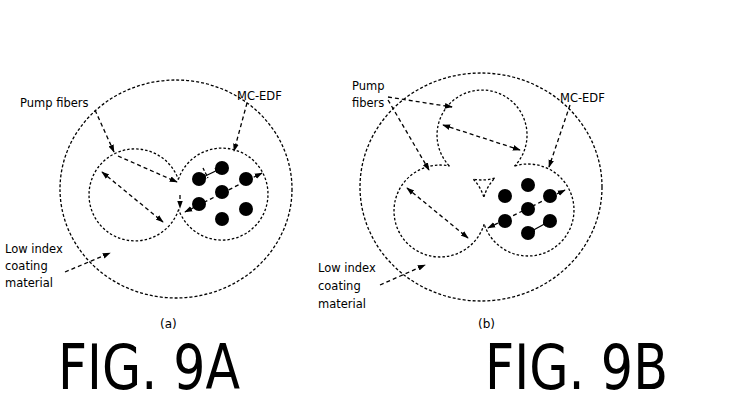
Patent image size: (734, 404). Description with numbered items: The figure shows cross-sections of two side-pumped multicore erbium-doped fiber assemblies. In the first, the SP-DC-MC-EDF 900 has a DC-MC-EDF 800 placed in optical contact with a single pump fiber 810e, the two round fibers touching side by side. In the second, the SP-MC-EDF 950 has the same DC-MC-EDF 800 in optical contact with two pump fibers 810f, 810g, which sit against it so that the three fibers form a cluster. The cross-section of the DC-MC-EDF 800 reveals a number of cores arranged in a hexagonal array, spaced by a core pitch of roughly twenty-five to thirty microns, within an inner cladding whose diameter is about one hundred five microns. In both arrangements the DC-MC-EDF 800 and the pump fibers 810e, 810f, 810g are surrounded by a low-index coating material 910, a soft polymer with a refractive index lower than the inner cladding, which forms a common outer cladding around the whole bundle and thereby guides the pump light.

In FIG. 9A, the SP-DC-MC-EDF 900 is at (202, 45).
In FIG. 9B, the SP-MC-EDF 950 is at (518, 48).
In FIG. 9A, the DC-MC-EDF 800 is at (252, 160).
In FIG. 9B, the DC-MC-EDF 800 is at (573, 196).
In FIG. 9A, the pump fiber 810e is at (138, 153).
In FIG. 9B, the pump fiber 810f is at (472, 94).
In FIG. 9B, the pump fiber 810g is at (394, 198).
In FIG. 9A, the low-index coating material 910 is at (233, 276).
In FIG. 9B, the low-index coating material 910 is at (550, 282).